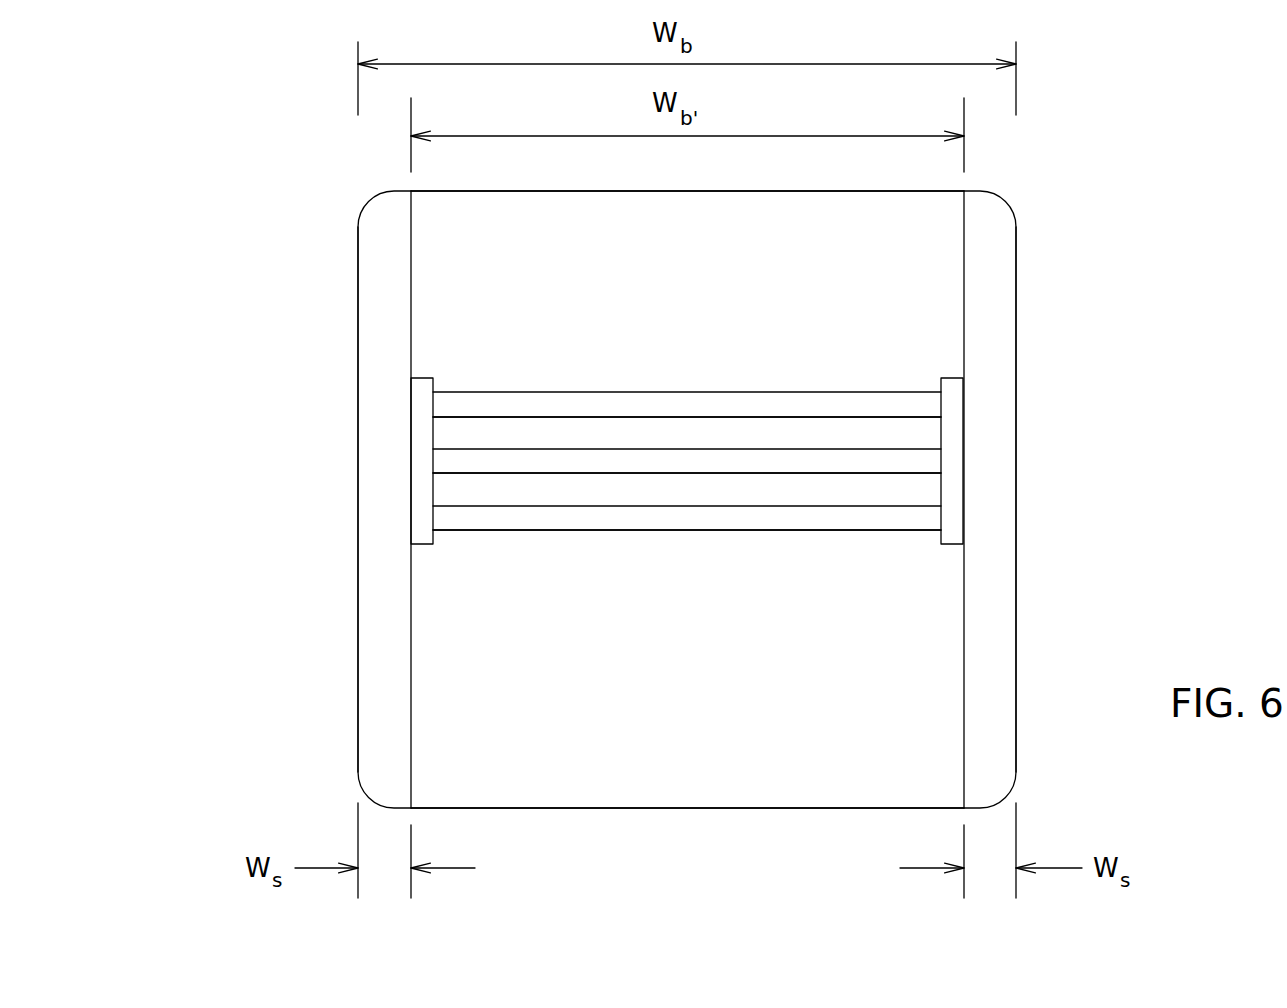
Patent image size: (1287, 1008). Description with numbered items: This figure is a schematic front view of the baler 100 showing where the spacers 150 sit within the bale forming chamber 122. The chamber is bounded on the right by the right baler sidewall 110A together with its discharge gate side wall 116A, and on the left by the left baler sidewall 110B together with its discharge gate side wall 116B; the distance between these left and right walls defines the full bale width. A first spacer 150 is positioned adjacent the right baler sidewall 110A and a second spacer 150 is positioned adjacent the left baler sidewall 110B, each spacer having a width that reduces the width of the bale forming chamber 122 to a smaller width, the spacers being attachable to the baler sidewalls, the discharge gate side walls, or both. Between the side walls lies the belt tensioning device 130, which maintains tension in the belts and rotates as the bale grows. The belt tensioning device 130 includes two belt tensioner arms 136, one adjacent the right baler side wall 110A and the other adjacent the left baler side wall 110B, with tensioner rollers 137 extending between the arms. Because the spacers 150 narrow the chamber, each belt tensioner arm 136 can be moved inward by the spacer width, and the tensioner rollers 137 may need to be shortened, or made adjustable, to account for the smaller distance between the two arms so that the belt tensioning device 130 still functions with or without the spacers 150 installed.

The baler 100 is at (1153, 82).
The right baler sidewall 110A is at (263, 499).
The discharge gate side wall 116A is at (357, 552).
The left baler sidewall 110B is at (1112, 499).
The discharge gate side wall 116B is at (1017, 552).
The belt tensioning device 130 is at (467, 287).
The bale forming chamber 122 is at (520, 642).
The spacer 150 is at (385, 383).
The belt tensioner arm 136 is at (422, 452).
The tensioner roller 137 is at (830, 402).